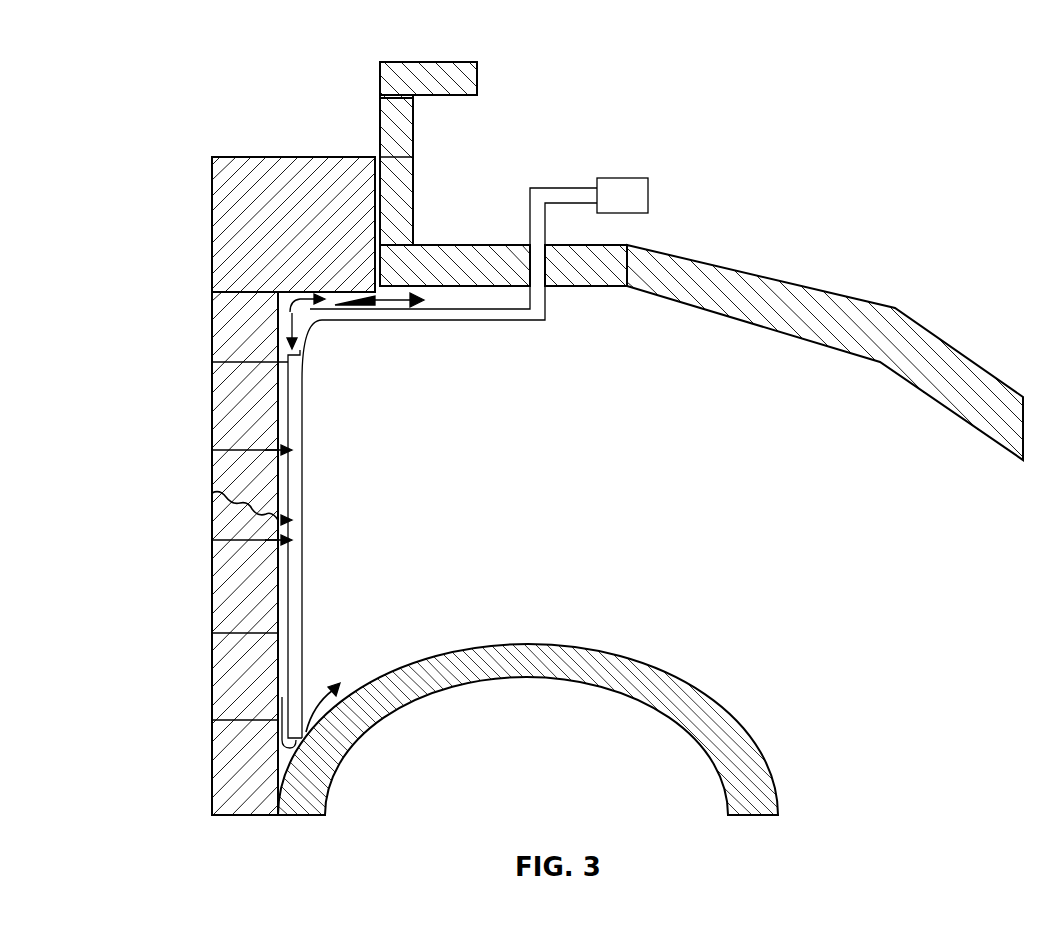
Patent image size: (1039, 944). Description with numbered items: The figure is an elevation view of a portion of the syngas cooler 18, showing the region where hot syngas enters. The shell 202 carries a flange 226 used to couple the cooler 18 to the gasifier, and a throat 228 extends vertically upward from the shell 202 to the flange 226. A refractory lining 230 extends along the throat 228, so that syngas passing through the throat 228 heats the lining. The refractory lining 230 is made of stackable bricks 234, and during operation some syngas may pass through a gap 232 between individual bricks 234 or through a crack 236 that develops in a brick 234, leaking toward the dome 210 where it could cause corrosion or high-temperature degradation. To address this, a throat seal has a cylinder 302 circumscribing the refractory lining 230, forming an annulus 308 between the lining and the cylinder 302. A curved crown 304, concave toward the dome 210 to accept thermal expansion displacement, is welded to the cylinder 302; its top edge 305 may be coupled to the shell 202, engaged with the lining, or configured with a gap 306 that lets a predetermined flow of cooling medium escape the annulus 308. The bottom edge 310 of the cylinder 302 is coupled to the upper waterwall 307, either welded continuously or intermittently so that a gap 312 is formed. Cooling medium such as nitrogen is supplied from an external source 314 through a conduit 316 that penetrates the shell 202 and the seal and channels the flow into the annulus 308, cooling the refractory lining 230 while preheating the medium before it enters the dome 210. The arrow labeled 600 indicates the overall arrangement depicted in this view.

The syngas cooler 18 is at (873, 77).
The shell 202 is at (798, 277).
The dome 210 is at (671, 521).
The flange 226 is at (480, 77).
The throat 228 is at (413, 130).
The refractory lining 230 is at (318, 157).
The gap 232 is at (289, 454).
The bricks 234 is at (212, 406).
The crack 236 is at (287, 528).
The cylinder 302 is at (307, 615).
The curved crown 304 is at (322, 336).
The top edge 305 is at (363, 304).
The gap 306 is at (380, 299).
The upper waterwall 307 is at (763, 754).
The annulus 308 is at (286, 360).
The bottom edge 310 is at (305, 722).
The gap 312 is at (293, 750).
The source 314 is at (622, 195).
The conduit 316 is at (557, 188).
The cooling system 600 is at (445, 508).